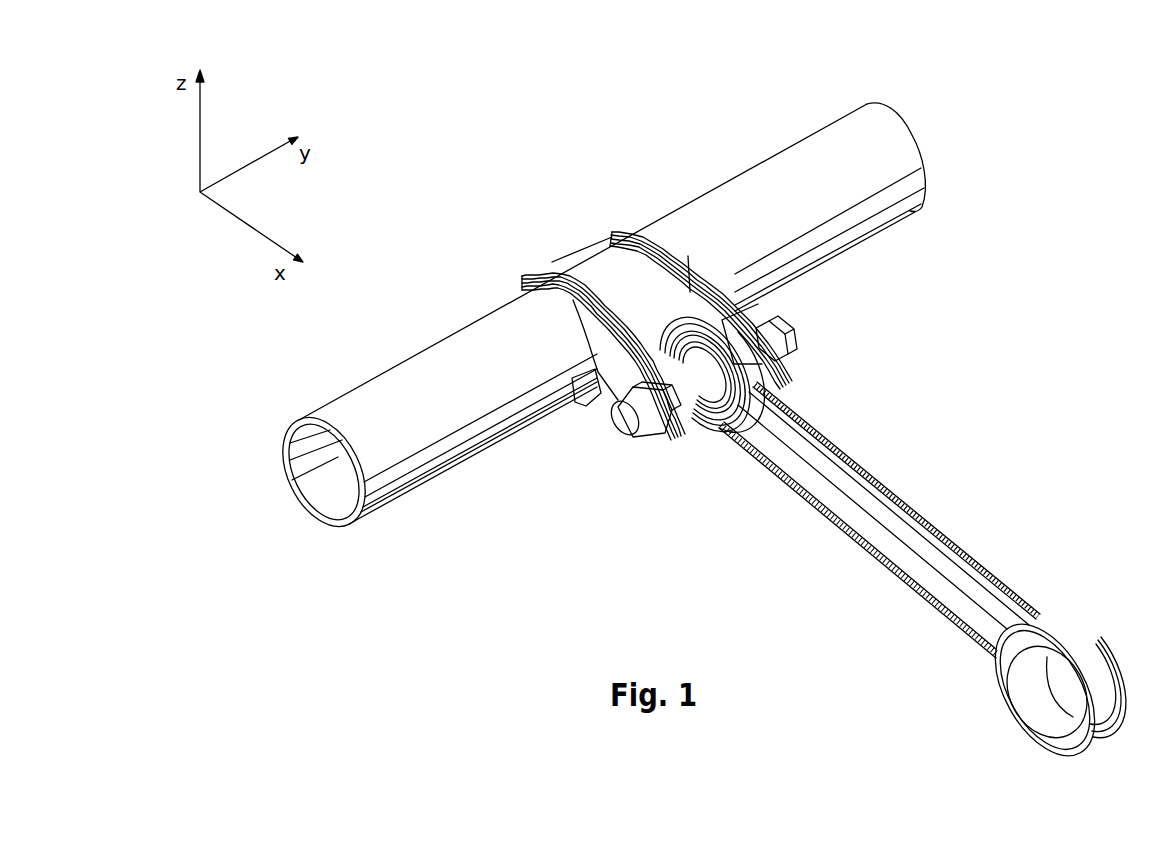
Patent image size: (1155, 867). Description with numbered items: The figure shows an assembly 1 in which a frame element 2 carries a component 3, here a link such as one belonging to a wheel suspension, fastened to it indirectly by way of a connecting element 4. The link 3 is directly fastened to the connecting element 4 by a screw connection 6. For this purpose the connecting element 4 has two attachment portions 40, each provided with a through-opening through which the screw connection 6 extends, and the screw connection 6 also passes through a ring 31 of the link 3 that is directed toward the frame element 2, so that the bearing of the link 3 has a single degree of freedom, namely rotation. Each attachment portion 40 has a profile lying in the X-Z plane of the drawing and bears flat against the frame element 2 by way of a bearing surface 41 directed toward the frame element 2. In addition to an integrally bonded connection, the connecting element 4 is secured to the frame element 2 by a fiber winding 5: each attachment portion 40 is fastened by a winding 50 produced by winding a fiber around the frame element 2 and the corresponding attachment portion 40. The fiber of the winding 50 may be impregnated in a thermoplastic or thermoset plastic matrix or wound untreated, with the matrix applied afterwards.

The assembly 1 is at (1086, 280).
The frame element 2 is at (338, 393).
The component (link) 3 is at (988, 556).
The ring 31 is at (707, 441).
The connecting element 4 is at (768, 318).
The attachment portion 40 is at (607, 309).
The bearing surface 41 is at (677, 294).
The fiber winding 5 is at (629, 222).
The winding 50 is at (541, 276).
The screw connection 6 is at (790, 344).